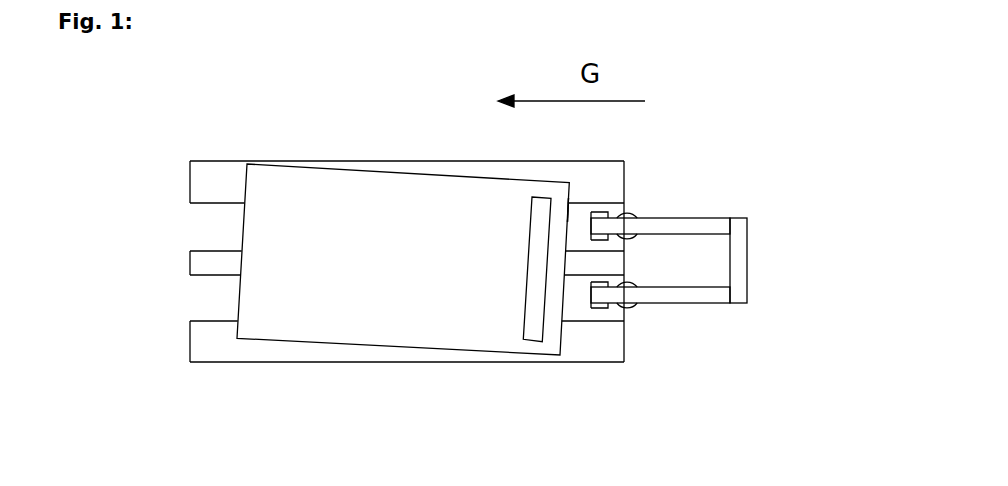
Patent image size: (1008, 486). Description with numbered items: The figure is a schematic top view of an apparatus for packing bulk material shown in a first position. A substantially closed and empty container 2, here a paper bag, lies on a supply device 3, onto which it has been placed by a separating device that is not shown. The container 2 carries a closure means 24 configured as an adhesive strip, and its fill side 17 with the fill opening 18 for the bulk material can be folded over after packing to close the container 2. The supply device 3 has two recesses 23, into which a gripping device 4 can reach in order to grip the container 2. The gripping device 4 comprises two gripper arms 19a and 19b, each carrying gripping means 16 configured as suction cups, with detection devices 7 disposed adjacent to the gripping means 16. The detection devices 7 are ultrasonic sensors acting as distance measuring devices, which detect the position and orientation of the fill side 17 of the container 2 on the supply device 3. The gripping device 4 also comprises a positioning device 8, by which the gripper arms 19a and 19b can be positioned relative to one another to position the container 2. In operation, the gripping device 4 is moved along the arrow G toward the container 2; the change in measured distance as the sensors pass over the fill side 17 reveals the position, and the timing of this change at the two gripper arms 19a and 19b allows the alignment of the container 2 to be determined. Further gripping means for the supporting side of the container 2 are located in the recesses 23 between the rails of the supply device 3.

The container 2 is at (404, 173).
The supply device 3 is at (225, 347).
The gripping device 4 is at (746, 328).
The detection devices 7 is at (597, 240).
The positioning device 8 is at (748, 273).
The gripping means 16 is at (628, 238).
The fill side 17 is at (568, 212).
The fill opening 18 is at (650, 181).
The gripper arm 19a is at (680, 231).
The gripper arm 19b is at (663, 303).
The recesses 23 is at (220, 225).
The closure means 24 is at (530, 320).